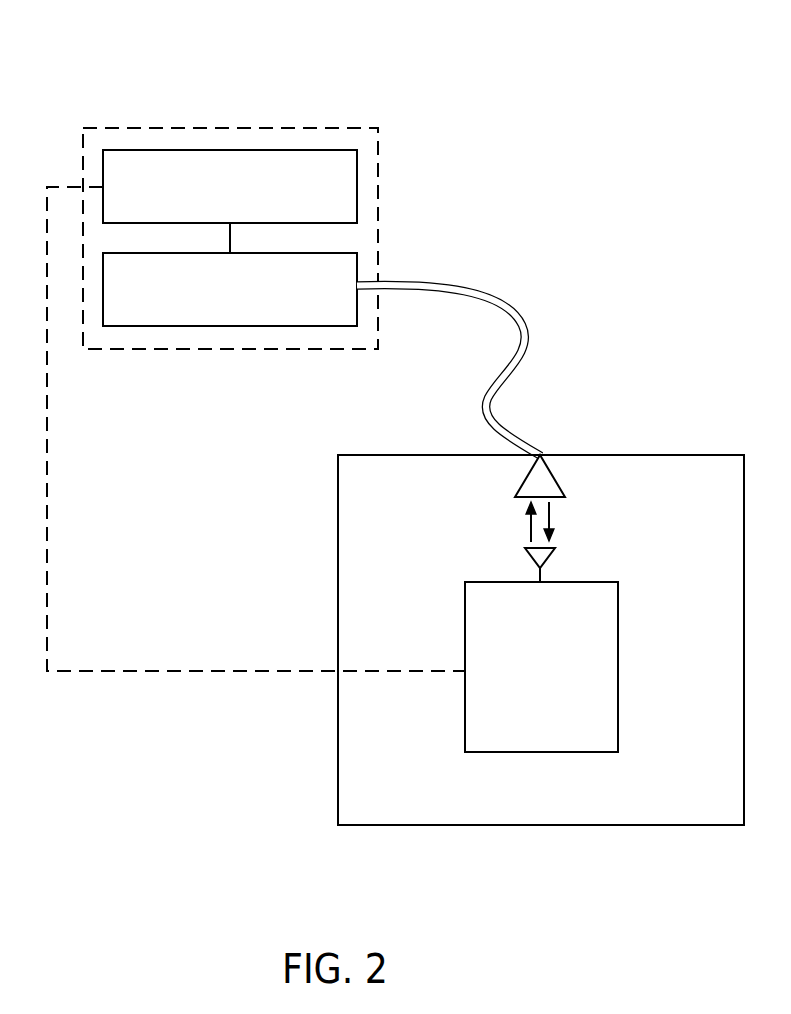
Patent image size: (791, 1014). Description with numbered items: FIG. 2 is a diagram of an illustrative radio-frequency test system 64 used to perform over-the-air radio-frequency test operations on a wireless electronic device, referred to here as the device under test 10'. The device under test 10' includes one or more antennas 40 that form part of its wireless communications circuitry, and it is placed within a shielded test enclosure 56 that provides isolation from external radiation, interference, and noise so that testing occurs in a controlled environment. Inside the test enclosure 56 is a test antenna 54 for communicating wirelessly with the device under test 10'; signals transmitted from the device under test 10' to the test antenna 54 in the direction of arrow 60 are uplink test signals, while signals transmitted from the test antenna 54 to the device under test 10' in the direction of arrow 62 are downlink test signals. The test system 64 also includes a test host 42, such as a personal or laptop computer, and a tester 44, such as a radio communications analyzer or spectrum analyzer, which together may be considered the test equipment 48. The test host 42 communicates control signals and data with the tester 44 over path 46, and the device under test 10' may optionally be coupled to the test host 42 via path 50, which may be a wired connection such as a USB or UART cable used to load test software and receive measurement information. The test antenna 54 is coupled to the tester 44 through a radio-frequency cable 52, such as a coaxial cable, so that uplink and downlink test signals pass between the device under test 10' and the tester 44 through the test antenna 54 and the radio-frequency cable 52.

The device under test 10' is at (574, 667).
The antennas 40 is at (550, 555).
The test host 42 is at (357, 176).
The tester 44 is at (310, 326).
The path 46 is at (230, 230).
The test equipment 48 is at (283, 128).
The path 50 is at (174, 672).
The radio-frequency cable 52 is at (466, 290).
The test antenna 54 is at (561, 478).
The test enclosure 56 is at (683, 455).
The arrow 60 is at (527, 518).
The arrow 62 is at (553, 510).
The radio-frequency test system 64 is at (648, 63).